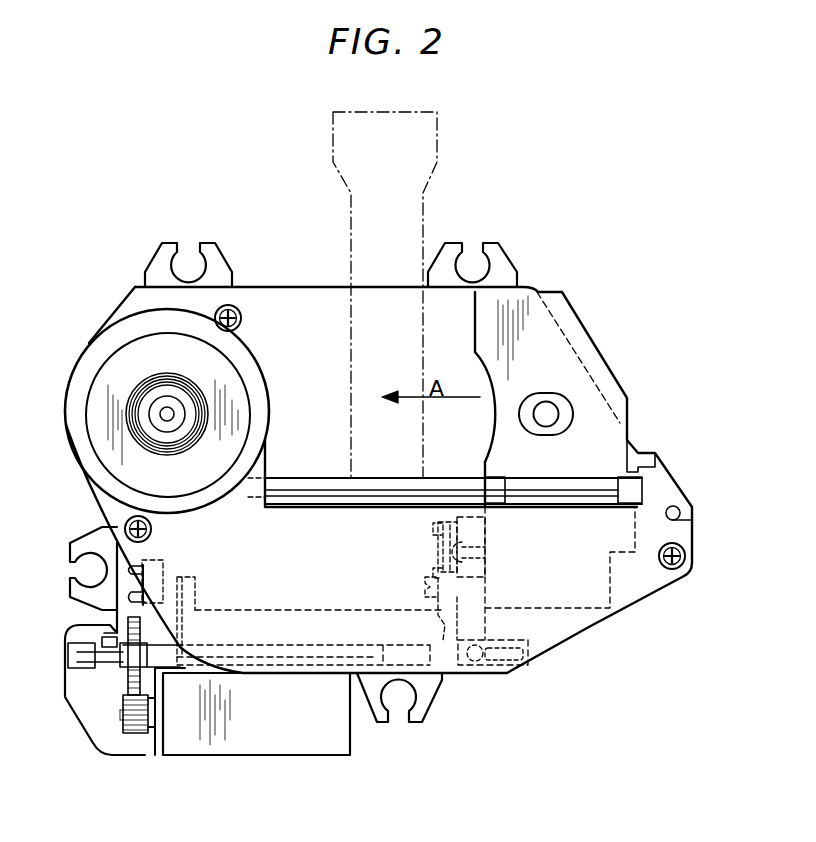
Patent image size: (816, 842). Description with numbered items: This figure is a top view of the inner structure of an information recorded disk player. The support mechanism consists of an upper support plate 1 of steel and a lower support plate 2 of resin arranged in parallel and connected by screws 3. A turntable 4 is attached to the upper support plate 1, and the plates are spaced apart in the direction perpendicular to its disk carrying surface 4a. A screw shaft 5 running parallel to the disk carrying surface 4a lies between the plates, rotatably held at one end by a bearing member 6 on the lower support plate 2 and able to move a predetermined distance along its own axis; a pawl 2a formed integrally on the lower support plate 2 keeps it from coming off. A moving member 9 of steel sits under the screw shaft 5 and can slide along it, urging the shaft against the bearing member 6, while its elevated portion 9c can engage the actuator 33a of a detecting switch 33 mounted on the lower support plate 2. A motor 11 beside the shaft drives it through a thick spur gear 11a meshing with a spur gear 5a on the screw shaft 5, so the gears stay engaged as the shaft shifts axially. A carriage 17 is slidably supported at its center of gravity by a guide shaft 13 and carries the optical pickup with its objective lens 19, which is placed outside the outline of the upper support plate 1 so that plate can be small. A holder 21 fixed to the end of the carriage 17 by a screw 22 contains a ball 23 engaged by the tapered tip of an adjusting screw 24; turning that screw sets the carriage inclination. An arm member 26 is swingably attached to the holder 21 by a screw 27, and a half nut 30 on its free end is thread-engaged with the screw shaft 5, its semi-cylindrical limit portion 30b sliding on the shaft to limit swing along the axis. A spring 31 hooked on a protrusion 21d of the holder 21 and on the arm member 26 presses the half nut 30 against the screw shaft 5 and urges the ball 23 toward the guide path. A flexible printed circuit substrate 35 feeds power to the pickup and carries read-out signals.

The upper support plate 1 is at (290, 520).
The lower support plate 2 is at (320, 305).
The pawl 2a is at (108, 628).
The screws 3 is at (218, 308).
The turntable 4 is at (72, 380).
The disk carrying surface 4a is at (77, 417).
The screw shaft 5 is at (172, 666).
The spur gear 5a is at (125, 680).
The bearing member 6 is at (65, 660).
The moving member 9 is at (258, 616).
The elevated portion 9c is at (197, 598).
The motor 11 is at (255, 745).
The spur gear 11a is at (138, 735).
The guide shaft 13 is at (441, 483).
The carriage 17 is at (620, 423).
The objective lens 19 is at (546, 402).
The holder 21 is at (483, 625).
The protrusion 21d is at (432, 532).
The screw 22 is at (473, 550).
The ball 23 is at (478, 661).
The adjusting screw 24 is at (521, 668).
The arm member 26 is at (432, 628).
The screw 27 is at (423, 585).
The half nut 30 is at (450, 672).
The limit portion 30b is at (398, 682).
The spring 31 is at (435, 555).
The detecting switch 33 is at (143, 588).
The actuator 33a is at (163, 580).
The flexible printed circuit substrate 35 is at (437, 121).